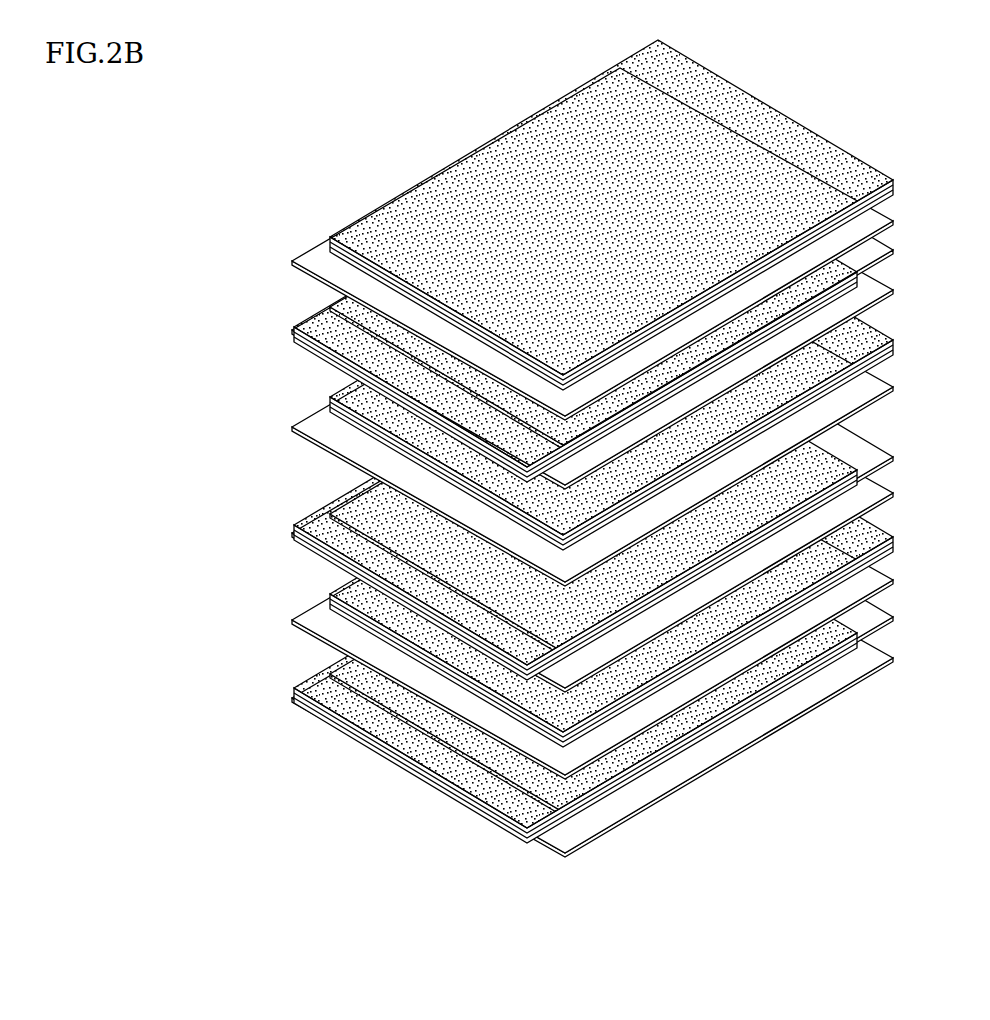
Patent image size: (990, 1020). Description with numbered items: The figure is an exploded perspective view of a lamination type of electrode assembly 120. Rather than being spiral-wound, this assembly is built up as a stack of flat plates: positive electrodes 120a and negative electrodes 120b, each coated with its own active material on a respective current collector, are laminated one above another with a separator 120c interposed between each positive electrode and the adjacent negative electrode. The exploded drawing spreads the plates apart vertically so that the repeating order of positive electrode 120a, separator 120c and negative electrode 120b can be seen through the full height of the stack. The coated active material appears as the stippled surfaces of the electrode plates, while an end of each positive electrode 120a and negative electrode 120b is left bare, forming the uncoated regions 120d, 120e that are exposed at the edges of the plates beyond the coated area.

The electrode assembly 120 is at (781, 73).
The positive electrode 120a is at (863, 527).
The negative electrode 120b is at (473, 408).
The separator 120c is at (625, 527).
The uncoated region 120d is at (332, 423).
The uncoated region 120e is at (644, 523).